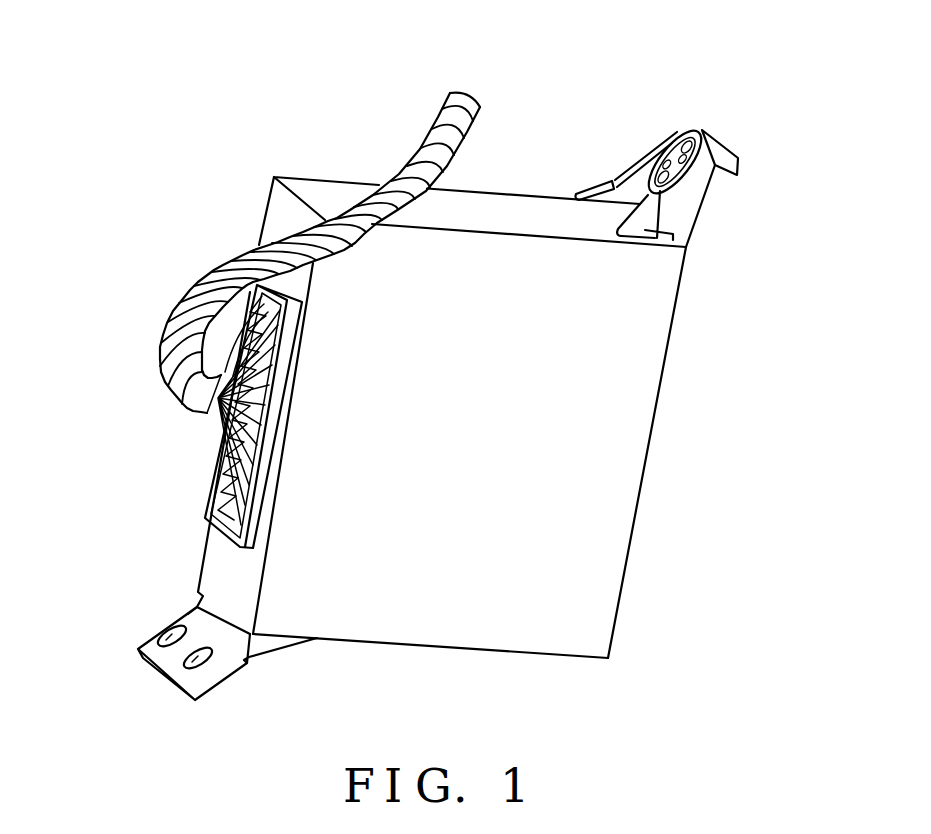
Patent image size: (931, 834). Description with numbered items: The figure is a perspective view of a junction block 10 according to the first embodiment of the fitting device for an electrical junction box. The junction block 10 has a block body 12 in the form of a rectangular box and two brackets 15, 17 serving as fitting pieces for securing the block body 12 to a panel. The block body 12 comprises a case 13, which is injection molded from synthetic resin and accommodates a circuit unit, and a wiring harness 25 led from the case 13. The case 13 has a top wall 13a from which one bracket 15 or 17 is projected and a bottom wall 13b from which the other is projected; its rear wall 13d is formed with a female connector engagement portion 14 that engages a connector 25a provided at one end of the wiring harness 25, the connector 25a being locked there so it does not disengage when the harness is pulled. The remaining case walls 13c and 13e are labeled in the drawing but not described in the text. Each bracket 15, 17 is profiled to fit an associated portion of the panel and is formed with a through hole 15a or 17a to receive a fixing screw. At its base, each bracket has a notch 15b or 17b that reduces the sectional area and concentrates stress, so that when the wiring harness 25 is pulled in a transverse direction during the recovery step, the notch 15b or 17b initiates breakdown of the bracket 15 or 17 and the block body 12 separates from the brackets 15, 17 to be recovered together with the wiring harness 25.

The junction block 10 is at (212, 14).
The block body 12 is at (663, 433).
The case 13 is at (613, 647).
The top wall 13a is at (527, 205).
The bottom wall 13b is at (473, 653).
The front face of case 13c is at (592, 530).
The rear wall 13d is at (225, 563).
The right side face of case 13e is at (677, 310).
The connector engagement portion 14 is at (270, 457).
The bracket 15 is at (148, 635).
The through hole 15a is at (180, 672).
The notch 15b is at (187, 618).
The bracket 17 is at (686, 129).
The through hole 17a is at (718, 147).
The notch 17b is at (604, 183).
The wiring harness 25 is at (418, 156).
The connector 25a is at (253, 490).